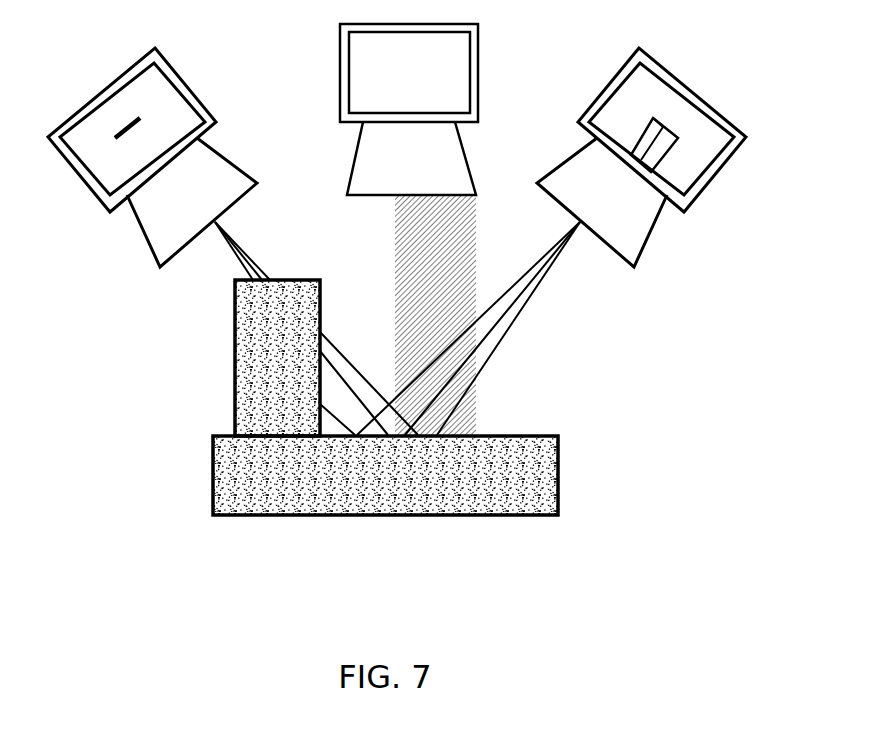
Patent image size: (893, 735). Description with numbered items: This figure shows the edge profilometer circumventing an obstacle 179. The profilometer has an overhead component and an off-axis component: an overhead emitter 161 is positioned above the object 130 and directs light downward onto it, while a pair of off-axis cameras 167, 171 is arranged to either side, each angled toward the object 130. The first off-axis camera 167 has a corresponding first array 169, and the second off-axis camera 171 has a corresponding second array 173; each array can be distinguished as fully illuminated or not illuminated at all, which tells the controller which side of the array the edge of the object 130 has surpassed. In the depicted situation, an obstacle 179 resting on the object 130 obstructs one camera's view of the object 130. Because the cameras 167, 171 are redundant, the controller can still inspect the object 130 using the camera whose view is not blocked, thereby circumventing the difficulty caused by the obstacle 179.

The object 130 is at (213, 477).
The overhead emitter 161 is at (409, 230).
The off-axis camera 167 is at (192, 82).
The first array 169 is at (128, 118).
The off-axis camera 171 is at (603, 83).
The second array 173 is at (670, 127).
The obstacle 179 is at (235, 371).